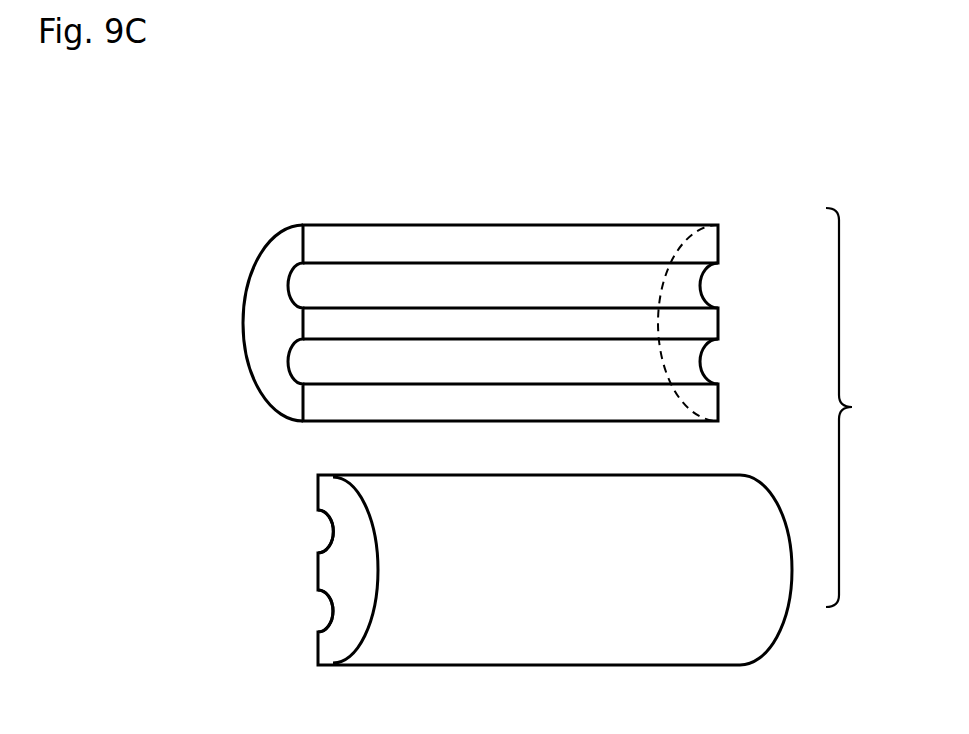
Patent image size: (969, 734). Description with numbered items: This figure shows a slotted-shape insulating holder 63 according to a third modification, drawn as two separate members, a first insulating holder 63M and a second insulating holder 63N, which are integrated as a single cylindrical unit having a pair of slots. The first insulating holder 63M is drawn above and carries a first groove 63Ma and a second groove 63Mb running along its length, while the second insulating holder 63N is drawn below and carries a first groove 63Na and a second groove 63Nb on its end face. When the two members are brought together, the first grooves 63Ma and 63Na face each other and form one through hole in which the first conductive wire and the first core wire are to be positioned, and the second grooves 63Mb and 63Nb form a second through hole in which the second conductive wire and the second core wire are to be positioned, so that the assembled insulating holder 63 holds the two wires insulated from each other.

The insulating holder 63 is at (863, 407).
The first insulating holder 63M is at (413, 288).
The first groove 63Ma is at (490, 296).
The second groove 63Mb is at (593, 365).
The second insulating holder 63N is at (510, 595).
The first groove 63Na is at (330, 530).
The second groove 63Nb is at (330, 612).